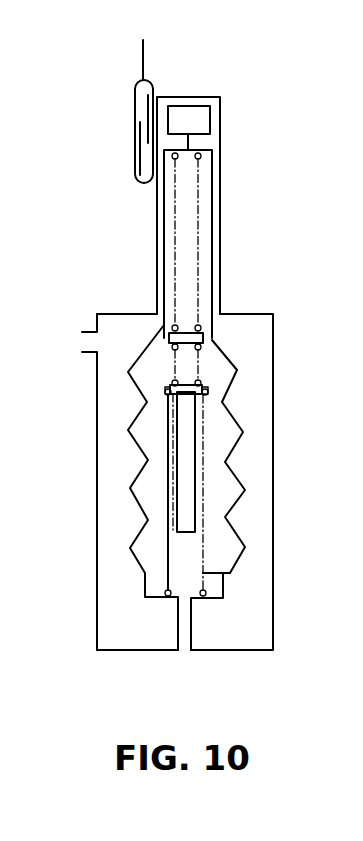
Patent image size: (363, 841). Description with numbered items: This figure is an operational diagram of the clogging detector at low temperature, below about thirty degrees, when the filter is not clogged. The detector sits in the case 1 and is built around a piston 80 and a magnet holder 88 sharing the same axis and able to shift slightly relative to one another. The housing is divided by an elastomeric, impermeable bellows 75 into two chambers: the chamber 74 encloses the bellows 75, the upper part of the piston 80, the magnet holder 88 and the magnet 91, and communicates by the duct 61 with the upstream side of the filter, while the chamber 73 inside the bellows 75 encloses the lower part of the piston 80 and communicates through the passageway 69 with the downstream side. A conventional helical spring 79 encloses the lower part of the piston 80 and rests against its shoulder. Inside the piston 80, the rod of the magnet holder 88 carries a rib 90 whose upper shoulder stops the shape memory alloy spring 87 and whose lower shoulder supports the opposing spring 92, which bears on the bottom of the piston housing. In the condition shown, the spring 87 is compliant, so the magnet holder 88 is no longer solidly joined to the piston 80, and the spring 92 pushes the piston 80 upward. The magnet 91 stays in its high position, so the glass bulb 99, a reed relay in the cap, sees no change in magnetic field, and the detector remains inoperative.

The case 1 is at (86, 570).
The duct 61 is at (86, 341).
The passageway 69 is at (181, 656).
The chamber 73 is at (148, 542).
The chamber 74 is at (107, 486).
The bellows 75 is at (238, 418).
The helical spring 79 is at (238, 575).
The piston 80 is at (218, 138).
The shape memory alloy spring 87 is at (217, 181).
The magnet holder 88 is at (183, 233).
The rib 90 is at (215, 328).
The magnet 91 is at (198, 112).
The opposing spring 92 is at (237, 369).
The glass bulb 99 is at (135, 110).